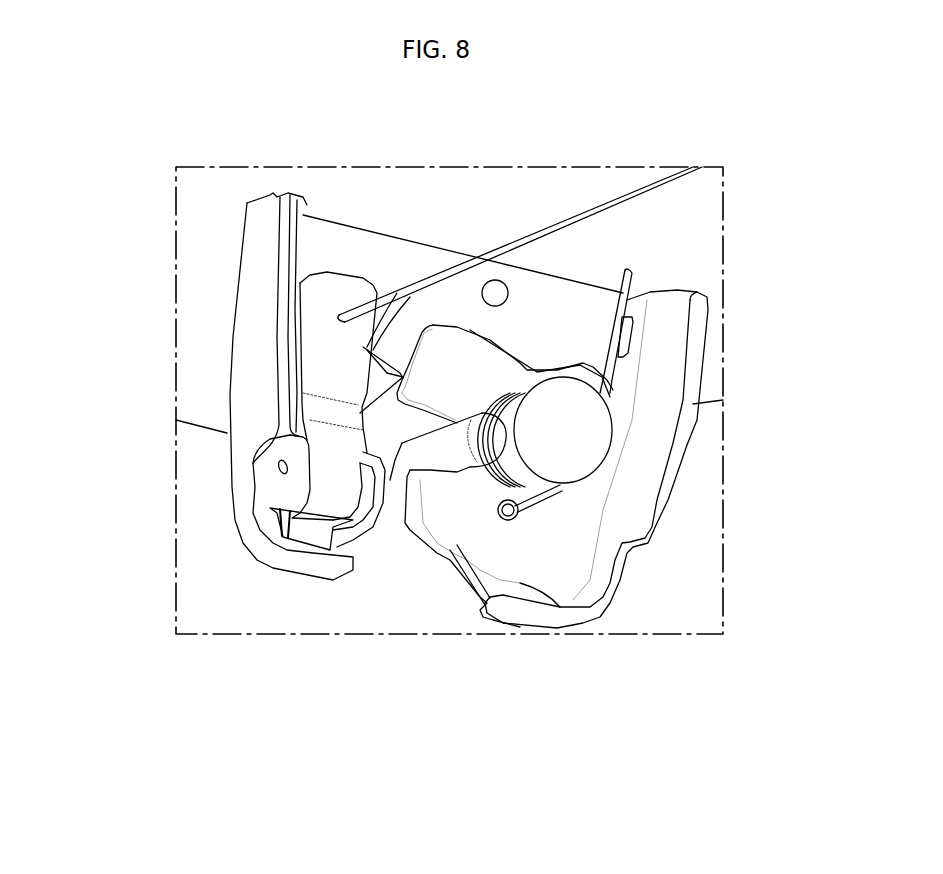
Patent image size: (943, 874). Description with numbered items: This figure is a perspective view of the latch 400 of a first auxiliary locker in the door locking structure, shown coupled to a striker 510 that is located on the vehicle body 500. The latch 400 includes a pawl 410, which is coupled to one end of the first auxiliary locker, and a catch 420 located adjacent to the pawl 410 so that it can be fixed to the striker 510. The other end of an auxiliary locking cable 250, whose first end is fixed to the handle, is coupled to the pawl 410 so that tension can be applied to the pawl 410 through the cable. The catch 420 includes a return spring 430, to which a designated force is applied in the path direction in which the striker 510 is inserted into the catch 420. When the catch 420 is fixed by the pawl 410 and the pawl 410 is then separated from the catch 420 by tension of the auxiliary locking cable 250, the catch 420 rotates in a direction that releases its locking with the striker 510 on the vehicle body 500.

The auxiliary locking cable 250 is at (562, 220).
The latch 400 is at (612, 616).
The pawl 410 is at (330, 368).
The catch 420 is at (560, 520).
The return spring 430 is at (627, 302).
The vehicle body 500 is at (200, 242).
The striker 510 is at (457, 453).